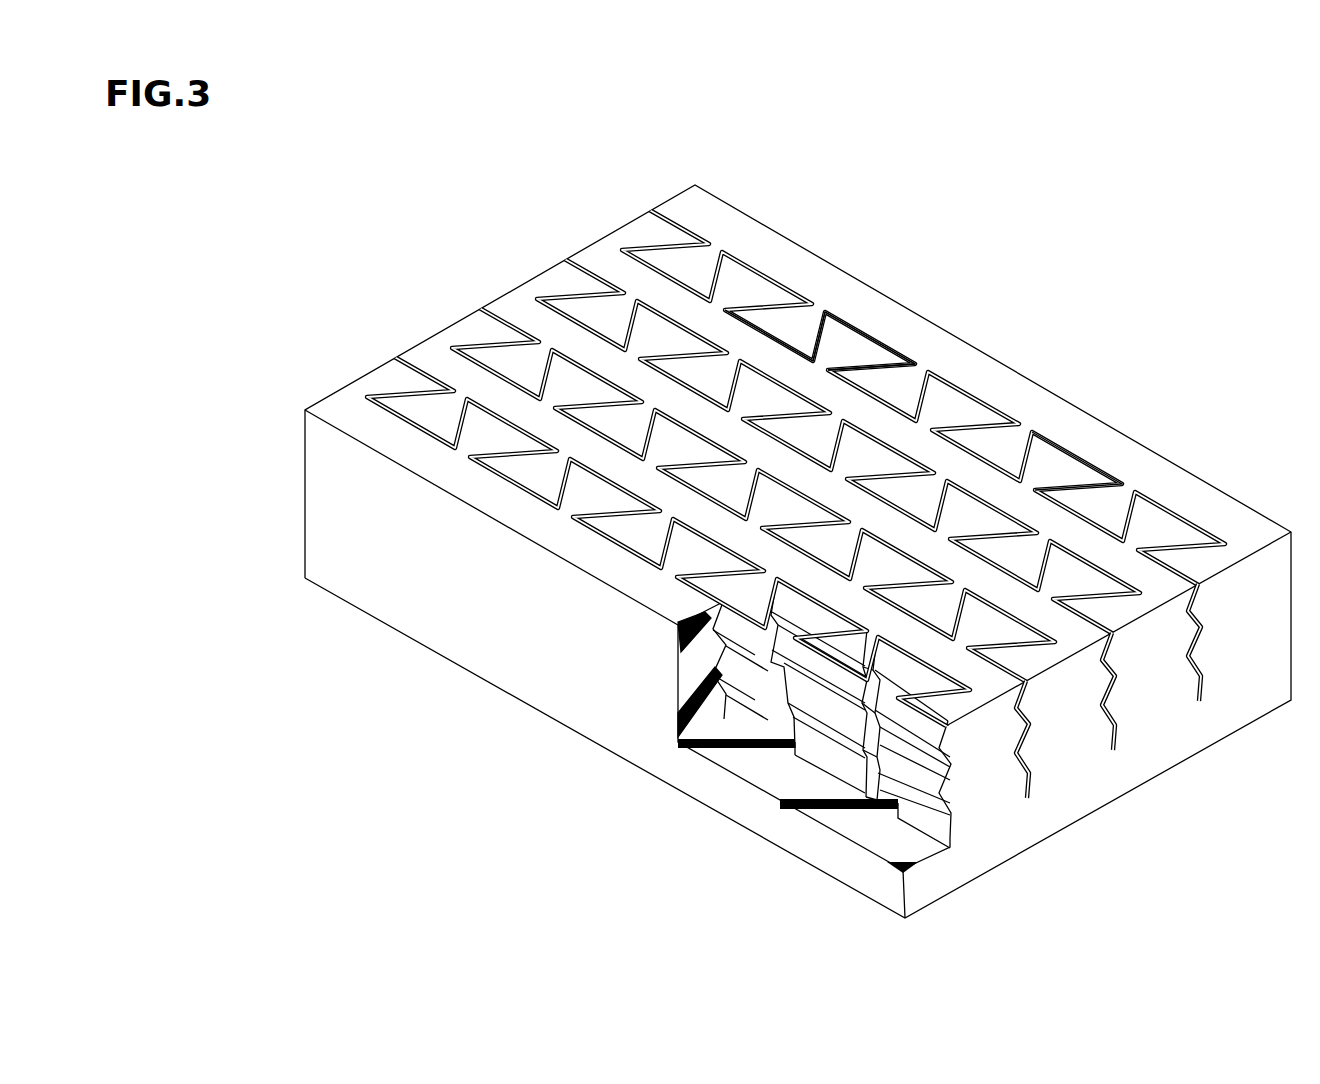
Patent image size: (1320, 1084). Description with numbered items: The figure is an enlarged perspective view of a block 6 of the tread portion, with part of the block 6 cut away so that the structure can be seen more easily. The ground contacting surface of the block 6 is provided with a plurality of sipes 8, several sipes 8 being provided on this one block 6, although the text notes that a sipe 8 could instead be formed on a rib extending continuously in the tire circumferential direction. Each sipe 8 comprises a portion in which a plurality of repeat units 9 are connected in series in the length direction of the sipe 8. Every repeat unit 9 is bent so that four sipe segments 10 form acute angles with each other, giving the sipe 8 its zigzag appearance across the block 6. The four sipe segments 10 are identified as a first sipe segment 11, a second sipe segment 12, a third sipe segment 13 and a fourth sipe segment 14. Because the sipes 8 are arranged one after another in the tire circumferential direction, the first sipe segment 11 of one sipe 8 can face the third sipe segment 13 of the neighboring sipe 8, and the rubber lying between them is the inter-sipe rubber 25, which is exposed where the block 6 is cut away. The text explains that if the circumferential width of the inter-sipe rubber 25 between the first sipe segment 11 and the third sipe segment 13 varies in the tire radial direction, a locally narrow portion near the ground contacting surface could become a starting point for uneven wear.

The block 6 is at (345, 346).
The sipe 8 is at (407, 423).
The repeat unit 9 is at (901, 166).
The sipe segment 10 is at (1073, 457).
The first sipe segment 11 is at (777, 338).
The second sipe segment 12 is at (880, 345).
The third sipe segment 13 is at (890, 356).
The fourth sipe segment 14 is at (884, 368).
The inter-sipe rubber 25 is at (1140, 572).